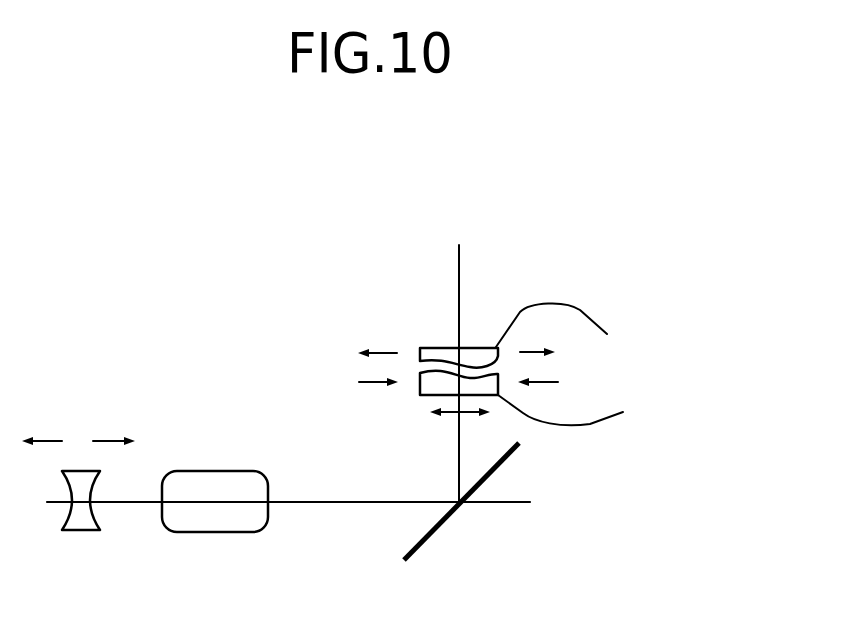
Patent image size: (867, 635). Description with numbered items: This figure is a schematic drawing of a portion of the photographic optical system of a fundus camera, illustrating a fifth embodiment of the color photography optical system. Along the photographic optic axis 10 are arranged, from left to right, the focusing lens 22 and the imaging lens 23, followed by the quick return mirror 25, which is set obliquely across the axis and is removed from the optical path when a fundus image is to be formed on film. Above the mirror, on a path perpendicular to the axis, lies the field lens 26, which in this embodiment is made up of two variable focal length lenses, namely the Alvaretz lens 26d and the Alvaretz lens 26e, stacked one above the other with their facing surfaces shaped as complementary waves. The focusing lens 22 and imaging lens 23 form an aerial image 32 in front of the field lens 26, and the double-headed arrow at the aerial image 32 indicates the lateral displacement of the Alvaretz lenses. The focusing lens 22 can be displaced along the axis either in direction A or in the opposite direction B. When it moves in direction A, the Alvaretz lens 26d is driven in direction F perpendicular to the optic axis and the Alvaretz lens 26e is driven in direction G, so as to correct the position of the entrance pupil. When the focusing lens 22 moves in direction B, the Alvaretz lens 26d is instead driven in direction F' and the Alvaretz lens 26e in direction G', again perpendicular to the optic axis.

The photographic optic axis 10 is at (330, 503).
The focusing lens 22 is at (75, 532).
The imaging lens 23 is at (220, 533).
The quick return mirror 25 is at (435, 535).
The field lens 26 is at (584, 369).
The Alvaretz lens 26e is at (607, 334).
The Alvaretz lens 26d is at (630, 410).
The aerial image 32 is at (429, 412).
The direction A is at (106, 441).
The direction B is at (49, 441).
The direction F is at (359, 407).
The direction G is at (377, 324).
The direction F' is at (559, 395).
The direction G' is at (561, 349).